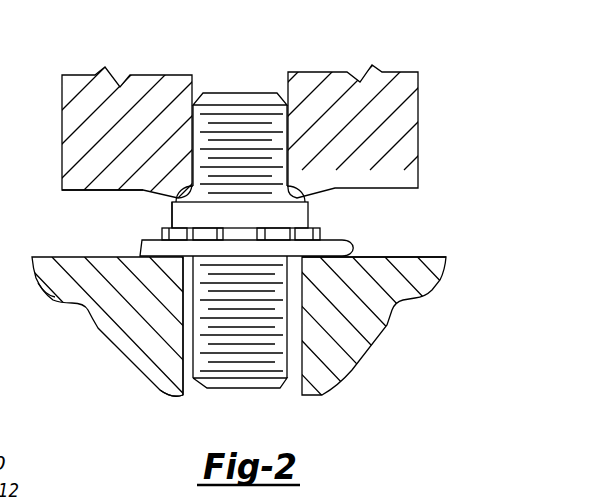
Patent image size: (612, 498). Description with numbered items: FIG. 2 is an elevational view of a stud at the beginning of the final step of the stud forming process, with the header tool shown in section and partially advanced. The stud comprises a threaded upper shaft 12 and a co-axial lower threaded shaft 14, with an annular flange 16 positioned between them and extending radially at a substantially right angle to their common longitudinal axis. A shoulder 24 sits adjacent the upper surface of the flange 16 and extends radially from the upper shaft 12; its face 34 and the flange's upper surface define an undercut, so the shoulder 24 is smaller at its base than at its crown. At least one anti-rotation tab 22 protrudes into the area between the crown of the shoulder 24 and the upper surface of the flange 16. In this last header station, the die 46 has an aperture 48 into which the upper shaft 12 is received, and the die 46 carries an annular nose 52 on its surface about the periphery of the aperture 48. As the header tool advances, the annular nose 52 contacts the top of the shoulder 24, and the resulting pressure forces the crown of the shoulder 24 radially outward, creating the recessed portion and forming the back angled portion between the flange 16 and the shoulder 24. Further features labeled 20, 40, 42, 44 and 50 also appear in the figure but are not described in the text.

The upper threaded shaft 12 is at (240, 92).
The lower threaded shaft 14 is at (260, 389).
The annular flange 16 is at (352, 257).
The bore 20 is at (198, 266).
The anti-rotation tab 22 is at (162, 229).
The shoulder 24 is at (170, 217).
The face of shoulder 34 is at (308, 208).
The left housing portion 40 is at (53, 301).
The gap 42 is at (193, 395).
The housing top surface 44 is at (412, 256).
The die 46 is at (62, 115).
The aperture 48 is at (230, 71).
The clamp block bottom surface 50 is at (100, 191).
The annular nose 52 is at (295, 198).